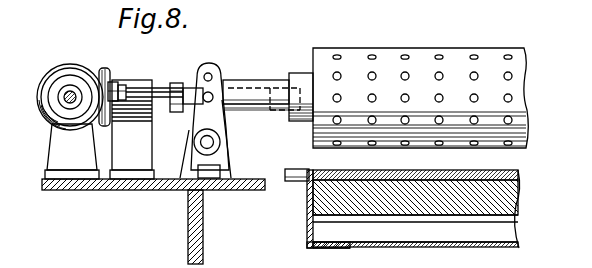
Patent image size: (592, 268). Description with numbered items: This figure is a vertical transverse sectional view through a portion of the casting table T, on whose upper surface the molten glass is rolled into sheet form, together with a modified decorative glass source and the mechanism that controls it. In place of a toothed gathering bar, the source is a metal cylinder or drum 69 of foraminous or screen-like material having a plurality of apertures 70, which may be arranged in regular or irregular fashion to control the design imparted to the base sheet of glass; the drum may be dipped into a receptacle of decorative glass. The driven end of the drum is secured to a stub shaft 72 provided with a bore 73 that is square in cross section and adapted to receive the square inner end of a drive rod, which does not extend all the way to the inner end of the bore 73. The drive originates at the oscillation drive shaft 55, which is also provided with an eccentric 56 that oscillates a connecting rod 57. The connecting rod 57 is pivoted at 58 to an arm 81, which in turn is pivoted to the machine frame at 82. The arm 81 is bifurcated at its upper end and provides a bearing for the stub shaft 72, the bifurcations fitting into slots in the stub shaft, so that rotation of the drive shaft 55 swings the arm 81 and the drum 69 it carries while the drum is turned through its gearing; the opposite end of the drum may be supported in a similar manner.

The oscillation drive shaft 55 is at (68, 94).
The eccentric 56 is at (77, 75).
The connecting rod 57 is at (133, 91).
The pivot 58 is at (208, 82).
The metal cylinder or drum 69 is at (387, 53).
The apertures 70 is at (476, 75).
The stub shaft 72 is at (242, 82).
The bore 73 is at (268, 90).
The arm 81 is at (195, 128).
The pivot 82 is at (214, 142).
The casting table T is at (503, 193).